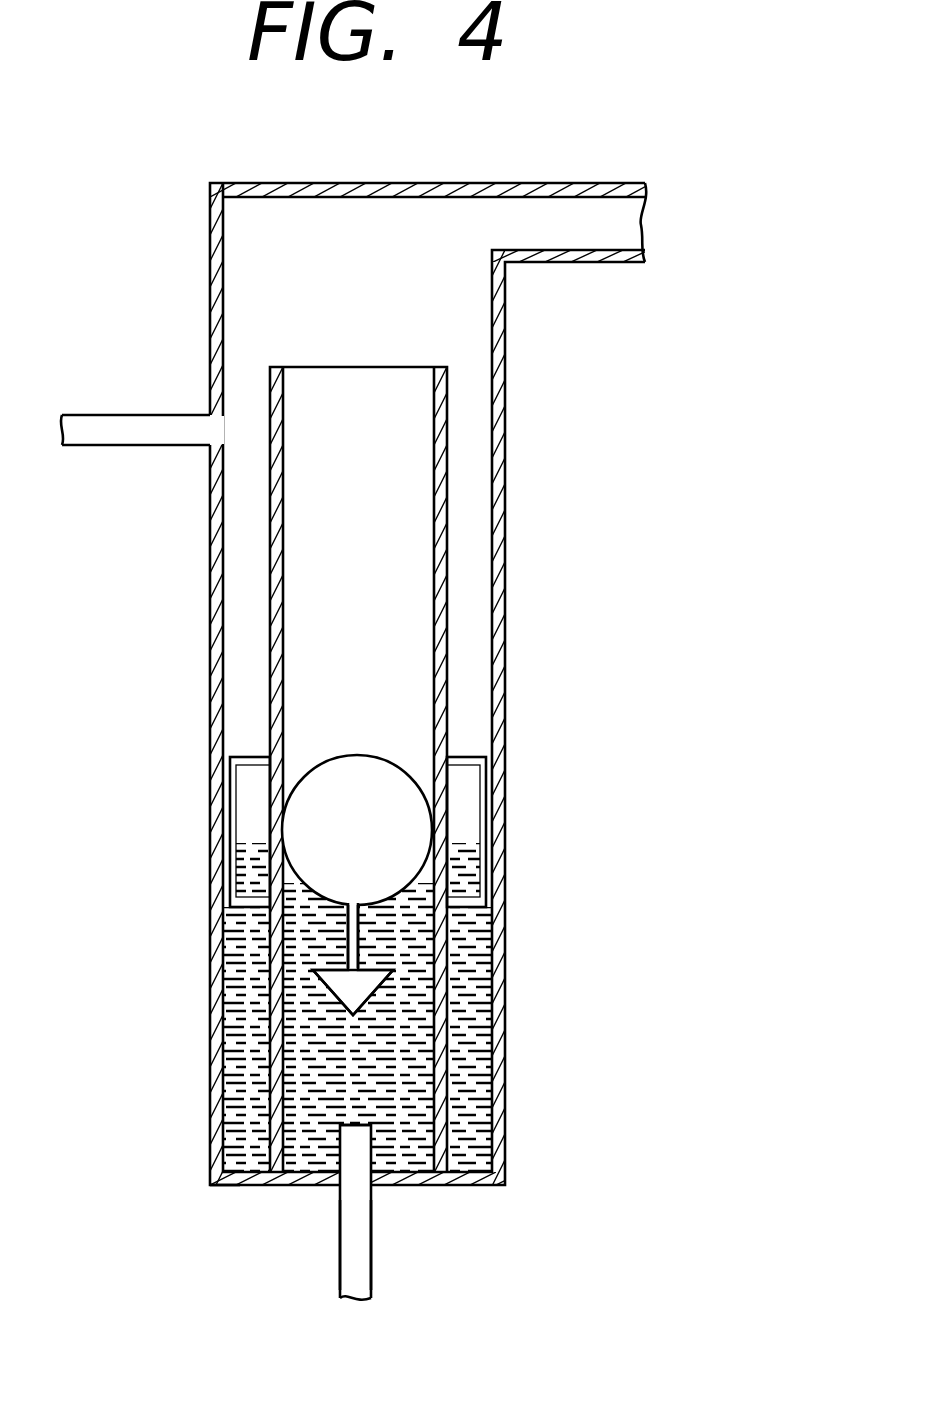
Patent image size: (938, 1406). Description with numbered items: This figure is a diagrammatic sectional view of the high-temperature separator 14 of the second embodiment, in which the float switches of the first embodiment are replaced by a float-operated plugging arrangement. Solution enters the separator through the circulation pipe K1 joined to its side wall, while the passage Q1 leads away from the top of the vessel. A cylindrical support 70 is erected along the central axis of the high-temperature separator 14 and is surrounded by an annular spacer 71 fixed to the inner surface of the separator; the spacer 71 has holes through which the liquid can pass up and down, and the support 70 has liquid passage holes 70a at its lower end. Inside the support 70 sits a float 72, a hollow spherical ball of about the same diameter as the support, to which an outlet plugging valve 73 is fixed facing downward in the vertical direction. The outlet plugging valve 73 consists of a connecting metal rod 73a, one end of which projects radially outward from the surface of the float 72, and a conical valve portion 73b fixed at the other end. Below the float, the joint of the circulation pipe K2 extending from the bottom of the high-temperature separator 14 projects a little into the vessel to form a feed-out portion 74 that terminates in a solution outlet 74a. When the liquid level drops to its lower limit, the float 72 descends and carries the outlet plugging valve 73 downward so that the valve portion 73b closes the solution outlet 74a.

The high-temperature separator 14 is at (210, 237).
The high-temperature separator outlet passage Q1 is at (579, 184).
The circulation pipe K1 is at (92, 414).
The circulation pipe K2 is at (373, 1240).
The cylindrical support 70 is at (448, 480).
The liquid passage holes 70a is at (228, 1186).
The annular spacer 71 is at (241, 758).
The float 72 is at (425, 792).
The outlet plugging valve 73 is at (343, 962).
The connecting metal rod 73a is at (367, 925).
The conical valve portion 73b is at (318, 1003).
The feed-out portion 74 is at (474, 1175).
The solution outlet 74a is at (357, 1126).